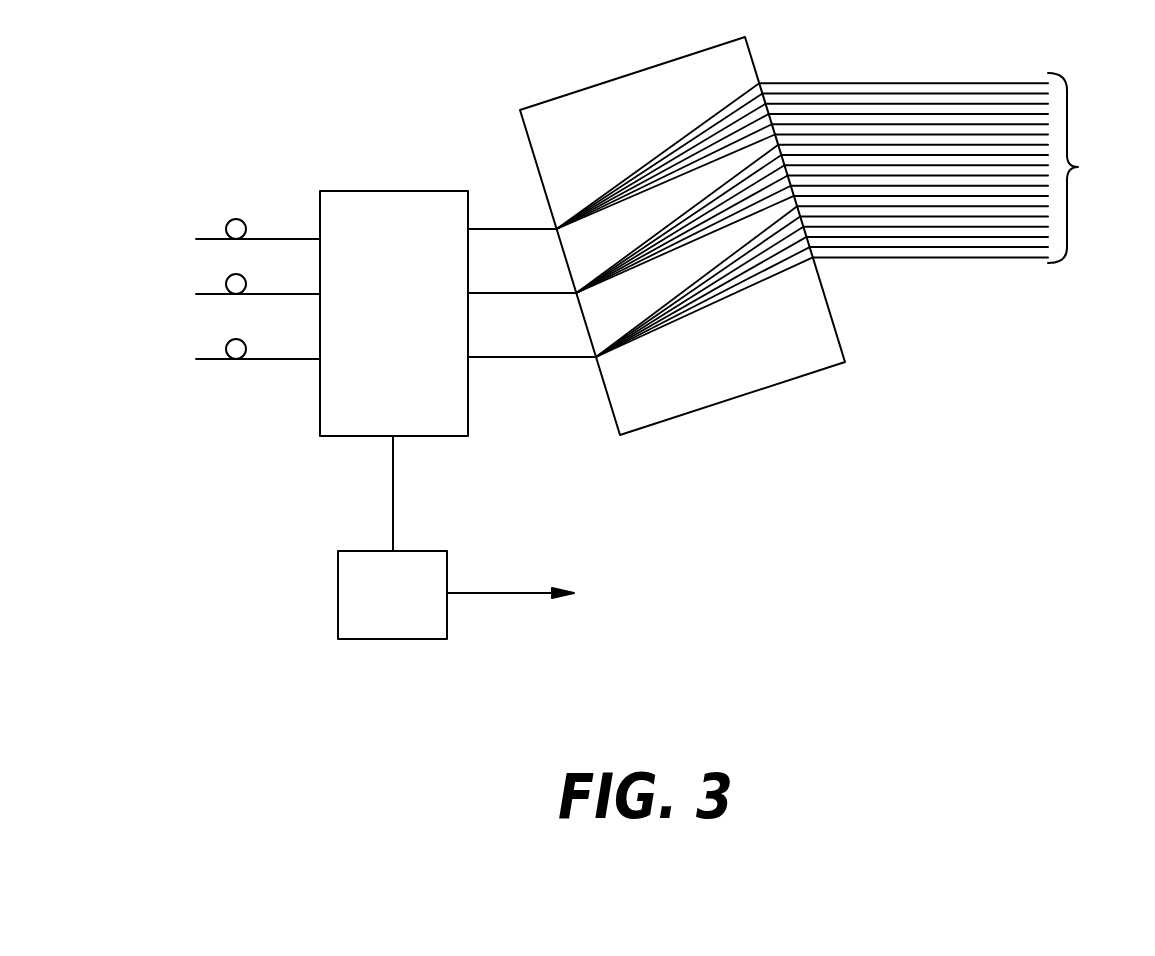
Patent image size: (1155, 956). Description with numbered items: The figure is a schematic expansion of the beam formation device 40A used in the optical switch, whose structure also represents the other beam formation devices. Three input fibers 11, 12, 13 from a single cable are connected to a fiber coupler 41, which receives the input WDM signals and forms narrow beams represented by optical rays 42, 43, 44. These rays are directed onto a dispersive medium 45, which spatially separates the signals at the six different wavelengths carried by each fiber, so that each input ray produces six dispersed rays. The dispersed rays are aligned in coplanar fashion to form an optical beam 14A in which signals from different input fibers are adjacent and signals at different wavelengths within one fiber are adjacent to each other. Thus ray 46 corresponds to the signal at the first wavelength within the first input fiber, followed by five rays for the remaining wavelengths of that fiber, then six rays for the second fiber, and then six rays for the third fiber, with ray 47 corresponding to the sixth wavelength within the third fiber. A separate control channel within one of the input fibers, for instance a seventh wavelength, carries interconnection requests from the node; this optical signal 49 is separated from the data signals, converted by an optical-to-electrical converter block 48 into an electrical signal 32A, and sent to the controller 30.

The input fiber 11 is at (208, 239).
The input fiber 12 is at (208, 294).
The input fiber 13 is at (208, 359).
The fiber coupler 41 is at (403, 190).
The optical ray 42 is at (510, 229).
The optical ray 43 is at (537, 293).
The optical ray 44 is at (528, 357).
The dispersive medium 45 is at (672, 60).
The ray 46 is at (873, 83).
The ray 47 is at (937, 260).
The optical beam 14A is at (945, 168).
The optical-to-electrical converter block 48 is at (338, 608).
The optical signal 49 is at (392, 507).
The electrical signal 32A is at (487, 593).
The controller 30 is at (709, 594).
The beam formation device 40A is at (472, 704).